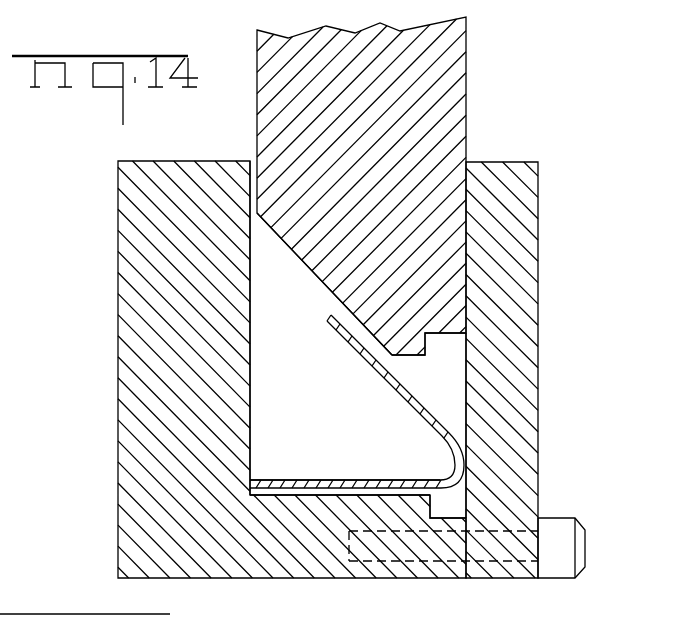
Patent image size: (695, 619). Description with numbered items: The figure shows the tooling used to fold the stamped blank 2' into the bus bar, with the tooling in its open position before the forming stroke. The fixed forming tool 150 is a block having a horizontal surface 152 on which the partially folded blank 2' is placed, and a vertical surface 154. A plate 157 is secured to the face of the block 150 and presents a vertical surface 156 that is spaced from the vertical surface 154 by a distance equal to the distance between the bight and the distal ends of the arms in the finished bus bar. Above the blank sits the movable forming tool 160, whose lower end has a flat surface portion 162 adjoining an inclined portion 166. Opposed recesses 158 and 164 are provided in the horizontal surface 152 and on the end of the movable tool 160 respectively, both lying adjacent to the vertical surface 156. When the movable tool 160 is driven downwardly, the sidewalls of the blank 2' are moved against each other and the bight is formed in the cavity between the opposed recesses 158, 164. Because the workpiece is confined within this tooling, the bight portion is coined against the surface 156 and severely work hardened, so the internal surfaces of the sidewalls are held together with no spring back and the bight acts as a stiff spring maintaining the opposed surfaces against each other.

The fixed forming tool 150 is at (138, 478).
The horizontal surface 152 is at (300, 490).
The vertical surface 154 is at (251, 303).
The vertical surface 156 is at (466, 402).
The plate 157 is at (522, 297).
The recess 158 is at (447, 502).
The movable forming tool 160 is at (452, 71).
The flat surface portion 162 is at (410, 357).
The recess 164 is at (446, 340).
The inclined portion 166 is at (322, 285).
The stamped blank 2' is at (345, 433).